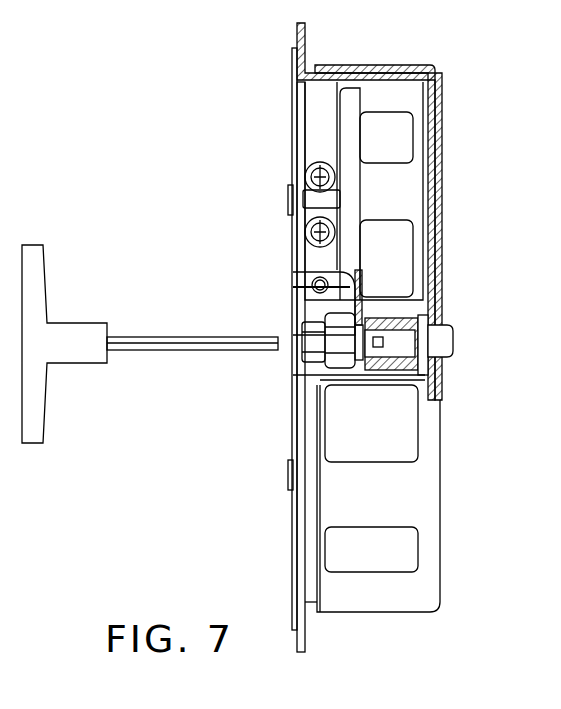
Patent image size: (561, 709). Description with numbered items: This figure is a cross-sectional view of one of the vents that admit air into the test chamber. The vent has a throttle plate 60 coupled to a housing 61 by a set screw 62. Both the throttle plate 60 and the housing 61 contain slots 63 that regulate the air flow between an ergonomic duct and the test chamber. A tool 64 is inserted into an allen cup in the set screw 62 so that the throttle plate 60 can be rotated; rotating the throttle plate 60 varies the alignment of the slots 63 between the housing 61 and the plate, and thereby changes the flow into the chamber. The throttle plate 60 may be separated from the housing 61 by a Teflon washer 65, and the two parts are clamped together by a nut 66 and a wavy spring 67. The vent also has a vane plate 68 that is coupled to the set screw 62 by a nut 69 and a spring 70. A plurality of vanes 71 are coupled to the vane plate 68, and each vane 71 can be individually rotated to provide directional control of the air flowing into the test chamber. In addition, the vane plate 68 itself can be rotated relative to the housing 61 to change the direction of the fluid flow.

The throttle plate 60 is at (427, 185).
The housing 61 is at (427, 185).
The set screw 62 is at (302, 330).
The slots 63 is at (387, 137).
The tool 64 is at (117, 342).
The Teflon washer 65 is at (418, 322).
The nut 66 is at (405, 312).
The wavy spring 67 is at (440, 365).
The vane plate 68 is at (358, 273).
The nut 69 is at (337, 345).
The spring 70 is at (360, 368).
The vanes 71 is at (315, 287).